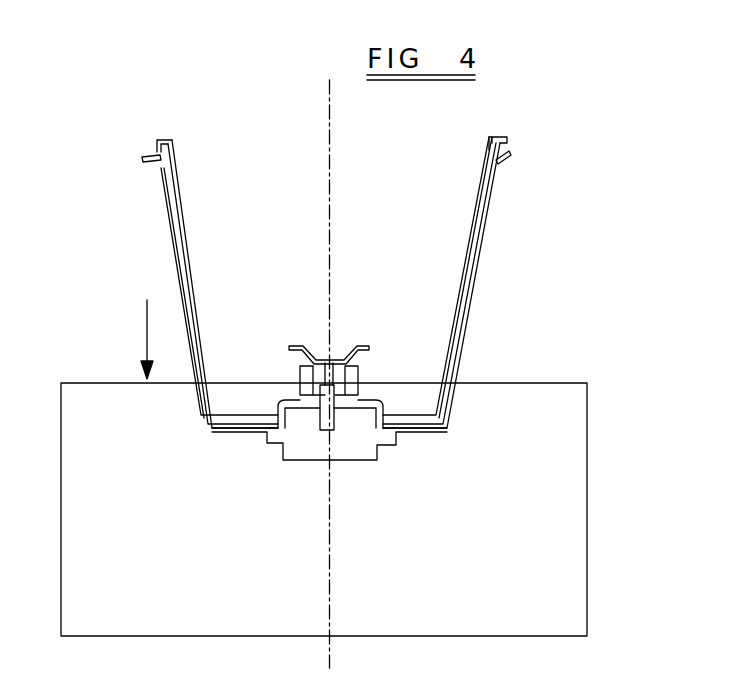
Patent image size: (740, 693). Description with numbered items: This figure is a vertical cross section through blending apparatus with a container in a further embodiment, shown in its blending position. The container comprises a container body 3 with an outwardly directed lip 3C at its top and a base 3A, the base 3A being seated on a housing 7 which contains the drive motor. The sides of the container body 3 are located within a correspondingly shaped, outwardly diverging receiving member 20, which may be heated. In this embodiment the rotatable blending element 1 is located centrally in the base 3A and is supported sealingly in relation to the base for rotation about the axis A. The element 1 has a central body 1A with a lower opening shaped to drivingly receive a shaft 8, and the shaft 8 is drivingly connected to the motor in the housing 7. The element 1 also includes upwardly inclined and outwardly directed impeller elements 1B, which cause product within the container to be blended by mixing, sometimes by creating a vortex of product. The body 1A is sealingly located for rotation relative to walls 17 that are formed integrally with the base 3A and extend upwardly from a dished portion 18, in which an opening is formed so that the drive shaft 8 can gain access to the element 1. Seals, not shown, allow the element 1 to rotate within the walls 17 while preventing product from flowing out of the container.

The axis A is at (330, 225).
The rotatable blending element 1 is at (324, 354).
The central body 1A is at (359, 382).
The impeller elements 1B is at (299, 346).
The container body 3 is at (463, 285).
The base 3A is at (418, 432).
The outwardly directed lip 3C is at (499, 136).
The housing 7 is at (606, 491).
The shaft 8 is at (333, 421).
The walls 17 is at (300, 376).
The dished portion 18 is at (277, 407).
The receiving member 20 is at (492, 203).